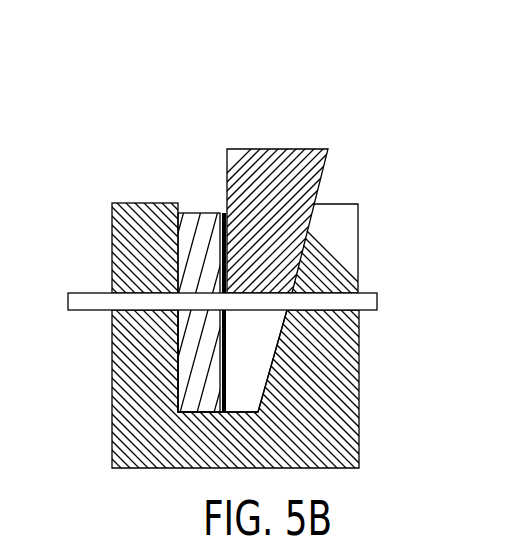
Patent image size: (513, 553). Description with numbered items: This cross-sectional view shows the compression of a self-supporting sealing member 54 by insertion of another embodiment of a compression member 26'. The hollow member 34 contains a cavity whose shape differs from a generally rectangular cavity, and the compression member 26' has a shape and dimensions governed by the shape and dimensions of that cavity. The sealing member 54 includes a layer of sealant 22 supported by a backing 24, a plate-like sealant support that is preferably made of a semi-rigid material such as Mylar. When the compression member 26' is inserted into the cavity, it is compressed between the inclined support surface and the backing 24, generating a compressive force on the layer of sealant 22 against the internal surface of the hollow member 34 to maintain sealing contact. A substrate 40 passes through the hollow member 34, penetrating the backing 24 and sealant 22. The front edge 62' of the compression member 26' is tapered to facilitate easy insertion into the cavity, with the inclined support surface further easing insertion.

The sealing member 54 is at (100, 104).
The layer of sealant 22 is at (201, 212).
The backing 24 is at (224, 212).
The compression member 26' is at (256, 305).
The substrate 40 is at (77, 292).
The hollow member 34 is at (110, 420).
The front edge 62' is at (304, 361).